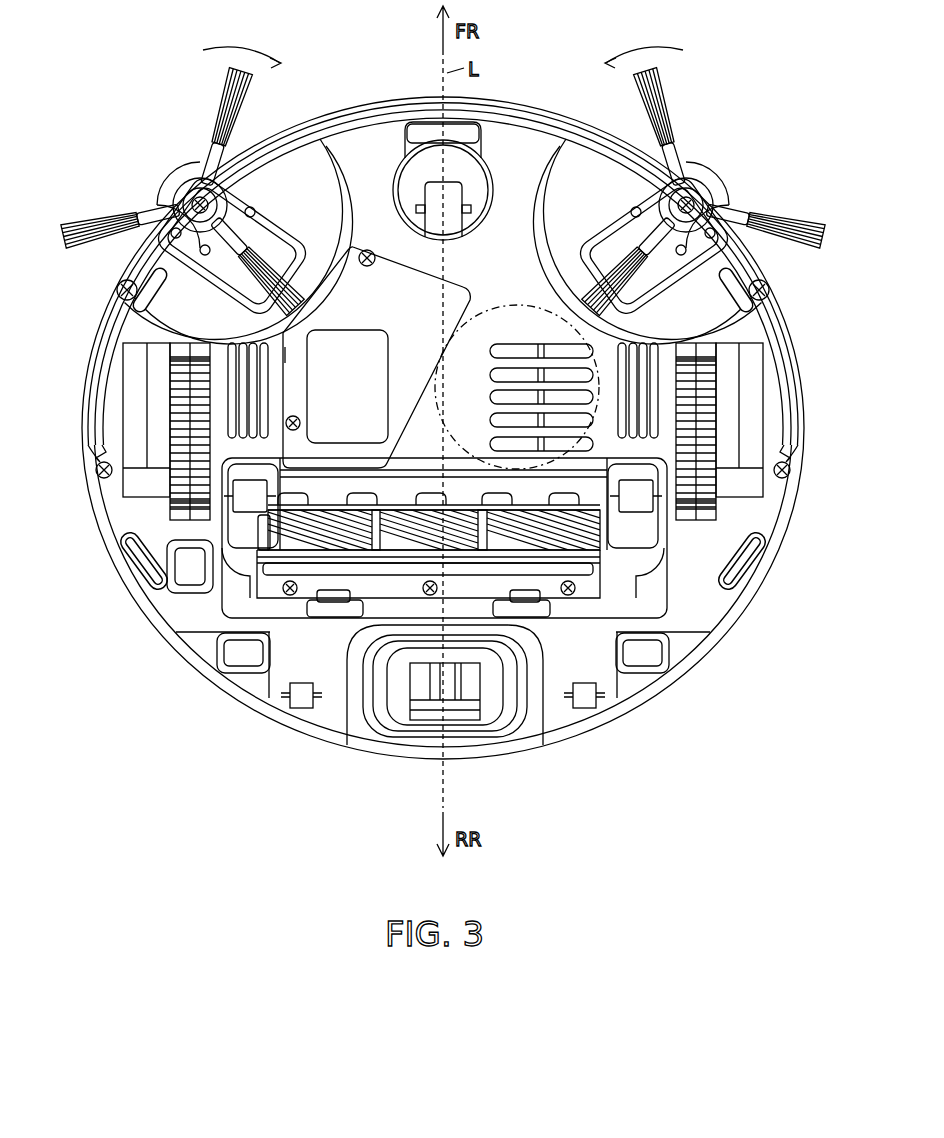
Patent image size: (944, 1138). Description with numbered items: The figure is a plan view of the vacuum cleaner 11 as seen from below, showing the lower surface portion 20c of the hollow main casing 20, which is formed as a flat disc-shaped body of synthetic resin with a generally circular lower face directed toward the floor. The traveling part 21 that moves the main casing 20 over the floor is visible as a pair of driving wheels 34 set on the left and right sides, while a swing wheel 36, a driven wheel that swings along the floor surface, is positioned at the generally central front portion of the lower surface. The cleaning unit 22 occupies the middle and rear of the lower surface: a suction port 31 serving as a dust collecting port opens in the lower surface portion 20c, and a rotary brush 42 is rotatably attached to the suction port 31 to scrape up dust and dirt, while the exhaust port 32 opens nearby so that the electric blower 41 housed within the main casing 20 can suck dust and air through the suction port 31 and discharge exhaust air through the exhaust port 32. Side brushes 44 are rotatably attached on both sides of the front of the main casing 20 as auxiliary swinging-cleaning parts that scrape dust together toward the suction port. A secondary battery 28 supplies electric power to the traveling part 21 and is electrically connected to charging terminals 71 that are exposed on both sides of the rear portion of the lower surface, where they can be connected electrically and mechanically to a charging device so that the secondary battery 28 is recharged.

The vacuum cleaner 11 is at (589, 47).
The main casing 20 is at (527, 96).
The lower surface portion 20c is at (712, 608).
The traveling part 21 is at (724, 428).
The cleaning unit 22 is at (604, 538).
The secondary battery 28 is at (371, 246).
The suction port 31 is at (470, 557).
The exhaust port 32 is at (557, 350).
The driving wheels 34 is at (176, 385).
The swing wheel 36 is at (453, 228).
The electric blower 41 is at (524, 348).
The rotary brush 42 is at (312, 540).
The side brushes 44 is at (146, 140).
The charging terminals 71 is at (243, 668).